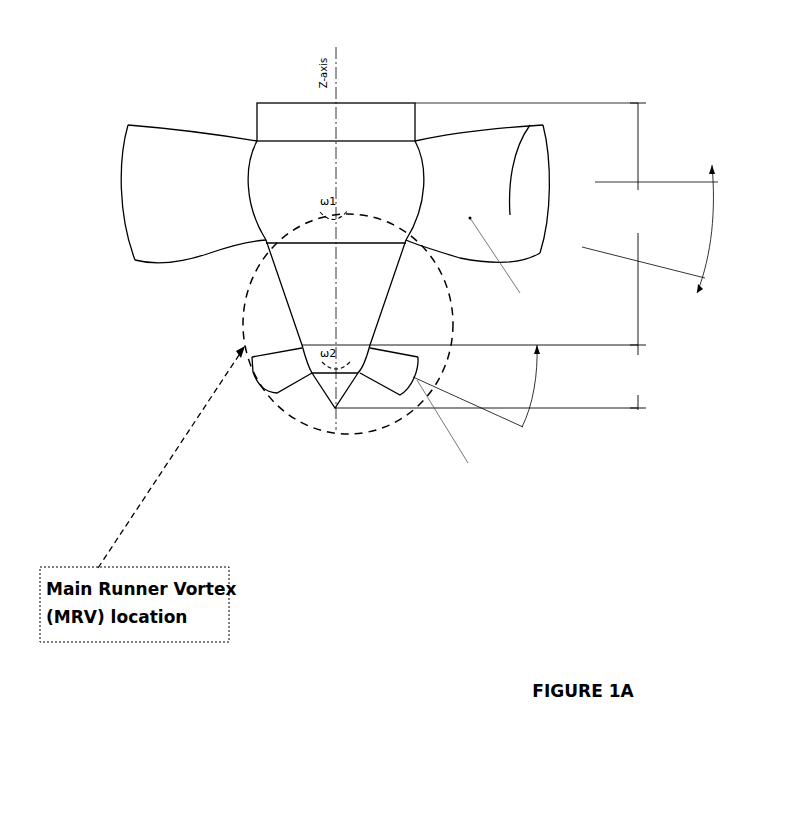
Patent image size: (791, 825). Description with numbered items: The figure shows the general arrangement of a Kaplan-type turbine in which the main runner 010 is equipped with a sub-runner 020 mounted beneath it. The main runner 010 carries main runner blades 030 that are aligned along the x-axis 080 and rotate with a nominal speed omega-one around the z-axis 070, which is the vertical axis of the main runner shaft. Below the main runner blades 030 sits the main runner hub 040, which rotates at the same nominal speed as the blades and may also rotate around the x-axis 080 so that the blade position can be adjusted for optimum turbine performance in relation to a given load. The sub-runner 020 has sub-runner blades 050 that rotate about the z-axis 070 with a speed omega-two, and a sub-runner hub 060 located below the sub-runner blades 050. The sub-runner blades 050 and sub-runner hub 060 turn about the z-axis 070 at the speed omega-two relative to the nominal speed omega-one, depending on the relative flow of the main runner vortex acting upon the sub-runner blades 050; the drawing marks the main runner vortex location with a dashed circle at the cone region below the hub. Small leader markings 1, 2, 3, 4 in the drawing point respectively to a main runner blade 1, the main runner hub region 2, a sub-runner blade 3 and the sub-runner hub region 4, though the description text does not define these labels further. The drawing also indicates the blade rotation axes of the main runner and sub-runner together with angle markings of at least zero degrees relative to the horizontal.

The main runner 010 is at (637, 229).
The sub-runner 020 is at (640, 387).
The main runner blades 030 is at (152, 203).
The main runner hub 040 is at (340, 297).
The sub-runner blades 050 is at (278, 373).
The sub-runner hub 060 is at (335, 392).
The z-axis 070 is at (340, 262).
The x-axis 080 is at (530, 125).
The main runner blade 1 is at (535, 243).
The main runner hub 2 is at (375, 272).
The sub runner blade 3 is at (387, 378).
The sub runner hub 4 is at (342, 380).